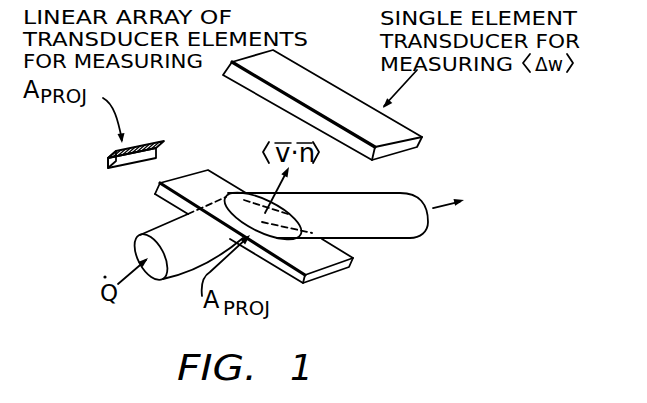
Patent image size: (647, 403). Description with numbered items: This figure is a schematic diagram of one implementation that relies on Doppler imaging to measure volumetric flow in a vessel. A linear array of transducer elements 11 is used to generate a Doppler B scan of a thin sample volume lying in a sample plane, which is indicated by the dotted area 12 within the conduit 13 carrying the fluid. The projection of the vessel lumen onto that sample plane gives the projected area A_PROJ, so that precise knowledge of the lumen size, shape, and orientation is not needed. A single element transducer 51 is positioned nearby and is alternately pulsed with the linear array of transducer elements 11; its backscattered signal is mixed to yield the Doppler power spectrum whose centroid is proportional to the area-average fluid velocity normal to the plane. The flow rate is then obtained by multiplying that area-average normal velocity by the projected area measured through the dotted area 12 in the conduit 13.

The linear array of transducer elements 11 is at (151, 140).
The single element transducer 51 is at (297, 85).
The dotted area 12 is at (285, 236).
The conduit 13 is at (398, 193).